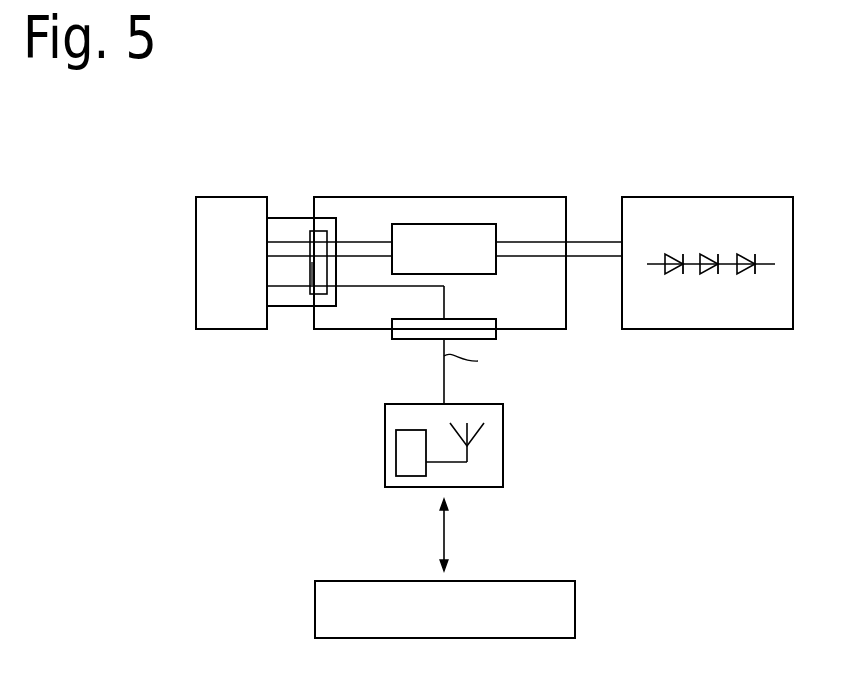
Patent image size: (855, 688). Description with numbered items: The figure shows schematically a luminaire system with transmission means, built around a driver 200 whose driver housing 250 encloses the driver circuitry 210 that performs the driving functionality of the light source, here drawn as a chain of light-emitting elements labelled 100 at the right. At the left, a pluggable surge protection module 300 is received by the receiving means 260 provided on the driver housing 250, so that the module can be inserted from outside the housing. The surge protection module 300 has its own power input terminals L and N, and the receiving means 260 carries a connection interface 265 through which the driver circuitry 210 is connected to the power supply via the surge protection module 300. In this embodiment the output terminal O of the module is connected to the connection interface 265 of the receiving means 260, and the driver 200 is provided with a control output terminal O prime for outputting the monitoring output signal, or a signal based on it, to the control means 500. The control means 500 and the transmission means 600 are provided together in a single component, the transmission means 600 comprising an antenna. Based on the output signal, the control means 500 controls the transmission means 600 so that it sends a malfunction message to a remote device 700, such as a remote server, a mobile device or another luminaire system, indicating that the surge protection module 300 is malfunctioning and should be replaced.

The LED light source / lighting load 100 is at (745, 197).
The driver 200 is at (368, 134).
The driver circuitry 210 is at (427, 224).
The driver housing 250 is at (497, 197).
The receiving means 260 is at (301, 218).
The connection interface 265 is at (312, 287).
The surge protection module 300 is at (232, 197).
The control means 500 is at (408, 466).
The transmission means 600 is at (503, 445).
The remote device 700 is at (546, 598).